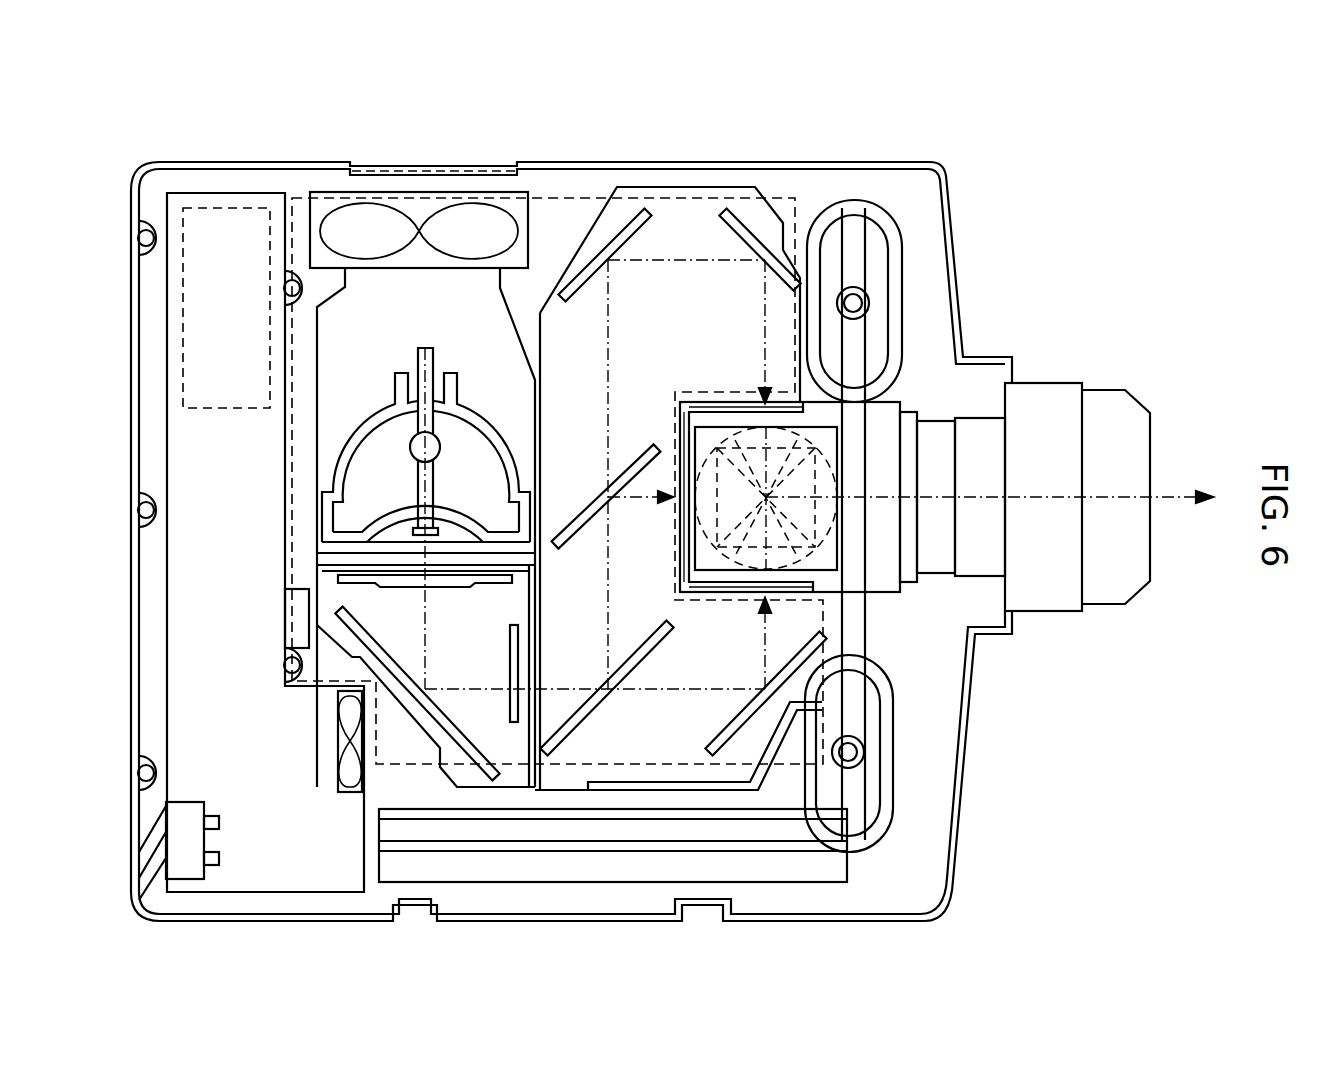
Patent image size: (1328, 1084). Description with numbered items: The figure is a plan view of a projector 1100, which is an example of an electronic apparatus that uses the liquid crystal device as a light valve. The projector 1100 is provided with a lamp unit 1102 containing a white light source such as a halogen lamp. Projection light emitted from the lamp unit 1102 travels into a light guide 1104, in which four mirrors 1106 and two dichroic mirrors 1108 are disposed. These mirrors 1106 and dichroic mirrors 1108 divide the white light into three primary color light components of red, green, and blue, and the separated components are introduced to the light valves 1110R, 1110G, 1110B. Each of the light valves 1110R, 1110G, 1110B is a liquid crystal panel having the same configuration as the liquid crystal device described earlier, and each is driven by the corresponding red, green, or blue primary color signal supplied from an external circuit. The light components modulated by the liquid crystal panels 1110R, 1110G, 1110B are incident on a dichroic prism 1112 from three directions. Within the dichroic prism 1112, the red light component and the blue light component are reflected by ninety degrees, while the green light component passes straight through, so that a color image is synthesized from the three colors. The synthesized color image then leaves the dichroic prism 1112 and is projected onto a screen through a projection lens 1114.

The projector 1100 is at (962, 164).
The lamp unit 1102 is at (480, 328).
The light guide 1104 is at (620, 207).
The mirrors 1106 is at (753, 223).
The dichroic mirrors 1108 is at (603, 512).
The light valve 1110R is at (748, 362).
The light valve 1110G is at (688, 472).
The light valve 1110B is at (717, 592).
The dichroic prism 1112 is at (830, 570).
The projection lens 1114 is at (1115, 397).